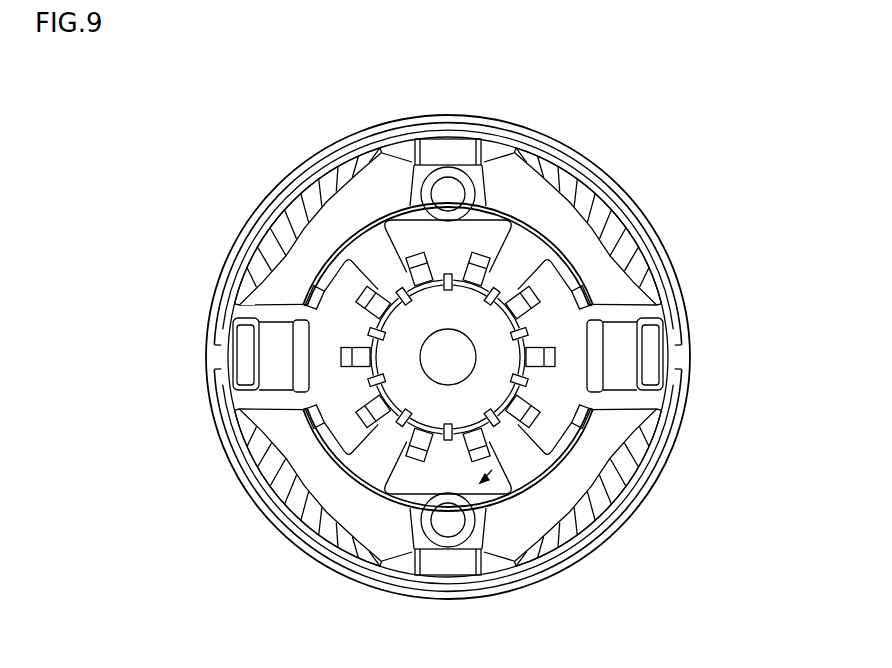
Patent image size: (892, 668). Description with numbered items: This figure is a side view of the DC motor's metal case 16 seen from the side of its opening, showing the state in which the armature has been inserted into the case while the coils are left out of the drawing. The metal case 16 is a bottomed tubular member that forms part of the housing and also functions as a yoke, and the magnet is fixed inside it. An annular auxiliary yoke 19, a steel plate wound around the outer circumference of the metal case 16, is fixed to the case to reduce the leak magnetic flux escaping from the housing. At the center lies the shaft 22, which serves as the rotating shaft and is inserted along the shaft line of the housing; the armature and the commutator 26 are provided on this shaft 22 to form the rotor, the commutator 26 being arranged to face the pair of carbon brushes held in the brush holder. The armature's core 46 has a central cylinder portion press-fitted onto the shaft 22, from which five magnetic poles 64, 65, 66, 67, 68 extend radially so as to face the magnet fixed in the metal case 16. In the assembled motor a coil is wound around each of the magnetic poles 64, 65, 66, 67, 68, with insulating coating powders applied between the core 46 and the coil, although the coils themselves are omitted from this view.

The metal case 16 is at (690, 346).
The auxiliary yoke 19 is at (640, 165).
The shaft 22 is at (445, 356).
The commutator 26 is at (492, 324).
The core 46 is at (510, 488).
The magnetic pole 64 is at (560, 402).
The magnetic pole 65 is at (435, 487).
The magnetic pole 66 is at (295, 402).
The magnetic pole 67 is at (360, 255).
The magnetic pole 68 is at (515, 255).